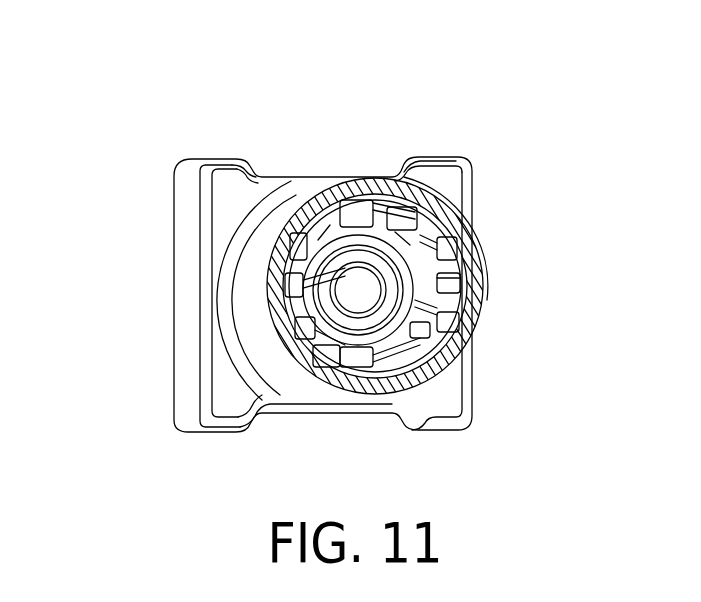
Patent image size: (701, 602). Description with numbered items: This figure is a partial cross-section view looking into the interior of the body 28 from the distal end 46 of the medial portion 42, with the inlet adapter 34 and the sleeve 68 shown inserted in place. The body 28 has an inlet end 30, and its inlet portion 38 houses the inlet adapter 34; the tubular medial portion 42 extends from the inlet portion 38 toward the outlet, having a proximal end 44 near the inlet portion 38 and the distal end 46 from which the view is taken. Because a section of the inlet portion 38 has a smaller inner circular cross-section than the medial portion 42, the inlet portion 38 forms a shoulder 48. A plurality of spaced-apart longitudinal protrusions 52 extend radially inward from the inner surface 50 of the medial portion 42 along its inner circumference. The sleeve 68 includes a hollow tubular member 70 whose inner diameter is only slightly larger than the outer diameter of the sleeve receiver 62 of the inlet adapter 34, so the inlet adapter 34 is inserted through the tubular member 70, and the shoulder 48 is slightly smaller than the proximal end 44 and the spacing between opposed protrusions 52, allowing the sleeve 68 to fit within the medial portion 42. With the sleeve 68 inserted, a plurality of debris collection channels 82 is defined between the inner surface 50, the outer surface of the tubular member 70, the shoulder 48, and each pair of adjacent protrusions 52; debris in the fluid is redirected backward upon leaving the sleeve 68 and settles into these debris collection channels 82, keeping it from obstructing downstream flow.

The body 28 is at (457, 157).
The inlet end 30 is at (173, 257).
The inlet adapter 34 is at (348, 320).
The inlet portion 38 is at (183, 215).
The medial portion 42 is at (268, 237).
The proximal end 44 is at (288, 210).
The distal end 46 is at (470, 240).
The shoulder 48 is at (350, 215).
The inner surface 50 is at (453, 310).
The protrusions 52 is at (455, 330).
The sleeve receiver 62 is at (322, 300).
The sleeve 68 is at (358, 345).
The tubular member 70 is at (335, 348).
The debris collection channels 82 is at (425, 325).